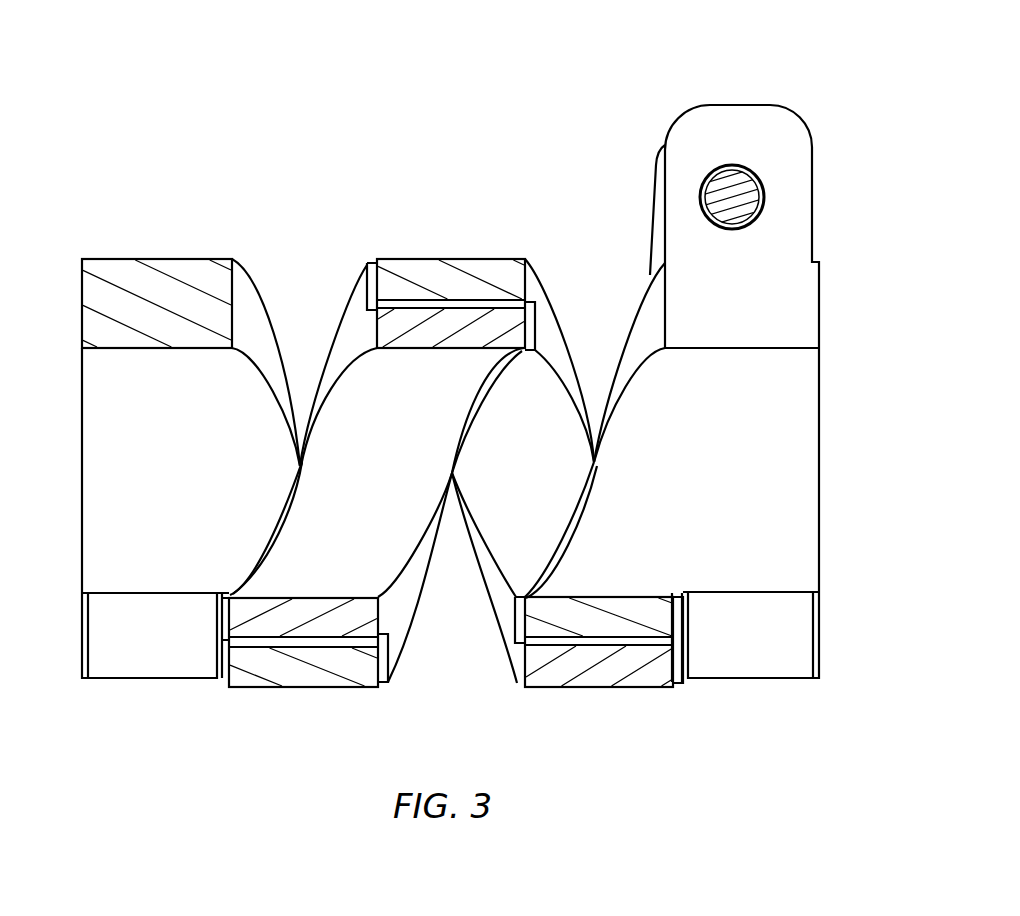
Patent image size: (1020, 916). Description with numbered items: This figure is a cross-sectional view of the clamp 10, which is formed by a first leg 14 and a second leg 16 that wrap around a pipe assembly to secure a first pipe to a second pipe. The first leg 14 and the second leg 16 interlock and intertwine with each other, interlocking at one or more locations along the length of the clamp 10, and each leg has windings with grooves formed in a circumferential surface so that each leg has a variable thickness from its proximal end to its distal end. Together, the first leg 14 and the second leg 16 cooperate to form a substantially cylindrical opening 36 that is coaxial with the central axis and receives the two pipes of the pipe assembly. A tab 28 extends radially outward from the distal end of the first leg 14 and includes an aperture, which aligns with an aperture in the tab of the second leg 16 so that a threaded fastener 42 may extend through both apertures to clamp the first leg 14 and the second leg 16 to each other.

The clamp 10 is at (375, 139).
The first leg 14 is at (306, 669).
The second leg 16 is at (150, 290).
The tab 28 is at (732, 124).
The substantially cylindrical opening 36 is at (158, 459).
The threaded fastener 42 is at (740, 191).